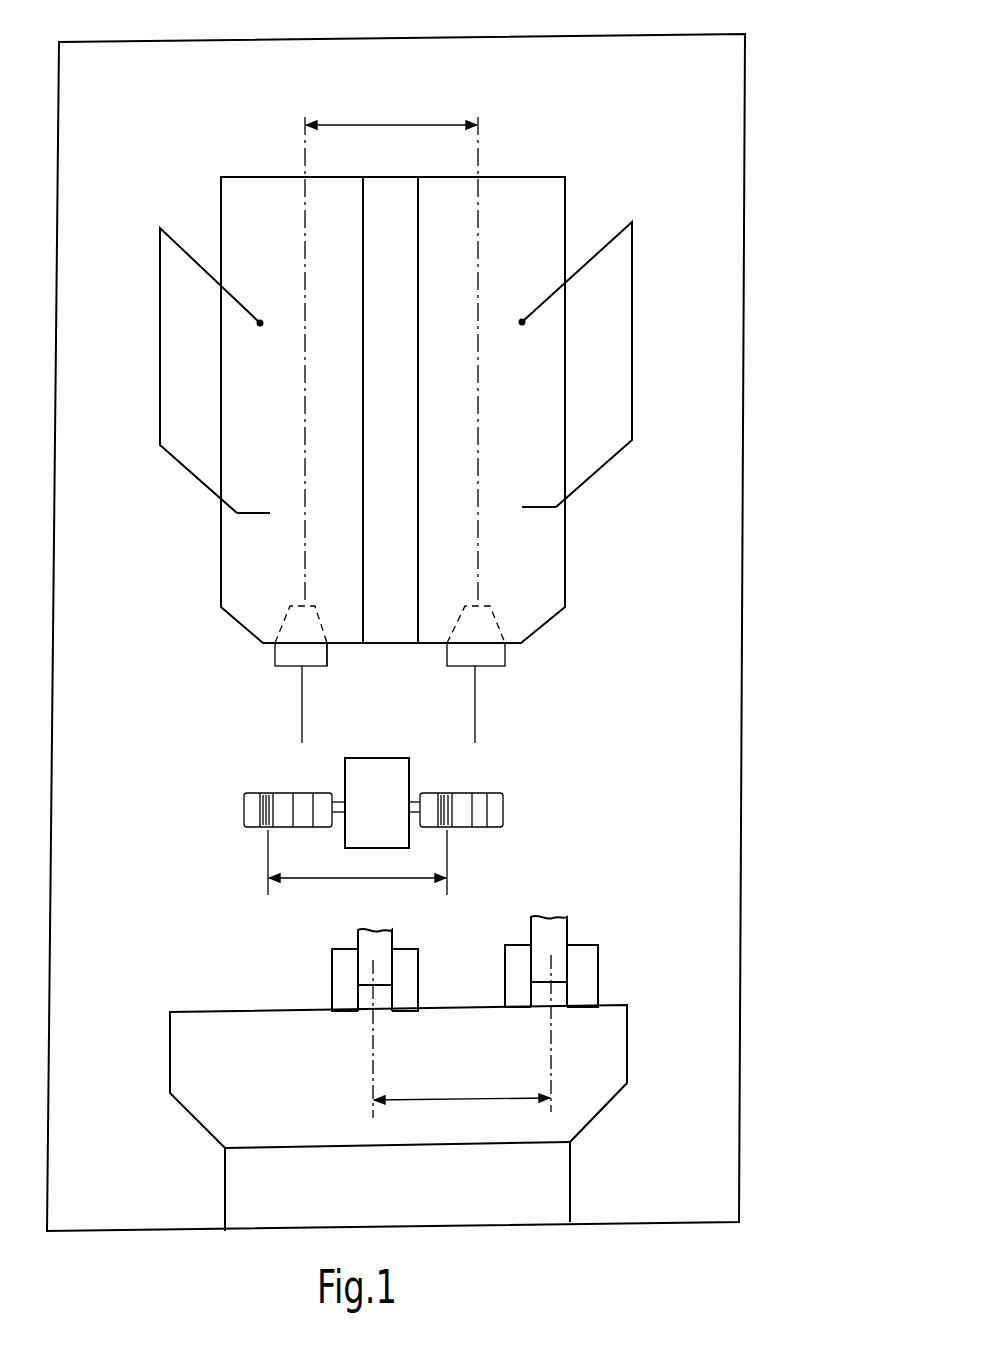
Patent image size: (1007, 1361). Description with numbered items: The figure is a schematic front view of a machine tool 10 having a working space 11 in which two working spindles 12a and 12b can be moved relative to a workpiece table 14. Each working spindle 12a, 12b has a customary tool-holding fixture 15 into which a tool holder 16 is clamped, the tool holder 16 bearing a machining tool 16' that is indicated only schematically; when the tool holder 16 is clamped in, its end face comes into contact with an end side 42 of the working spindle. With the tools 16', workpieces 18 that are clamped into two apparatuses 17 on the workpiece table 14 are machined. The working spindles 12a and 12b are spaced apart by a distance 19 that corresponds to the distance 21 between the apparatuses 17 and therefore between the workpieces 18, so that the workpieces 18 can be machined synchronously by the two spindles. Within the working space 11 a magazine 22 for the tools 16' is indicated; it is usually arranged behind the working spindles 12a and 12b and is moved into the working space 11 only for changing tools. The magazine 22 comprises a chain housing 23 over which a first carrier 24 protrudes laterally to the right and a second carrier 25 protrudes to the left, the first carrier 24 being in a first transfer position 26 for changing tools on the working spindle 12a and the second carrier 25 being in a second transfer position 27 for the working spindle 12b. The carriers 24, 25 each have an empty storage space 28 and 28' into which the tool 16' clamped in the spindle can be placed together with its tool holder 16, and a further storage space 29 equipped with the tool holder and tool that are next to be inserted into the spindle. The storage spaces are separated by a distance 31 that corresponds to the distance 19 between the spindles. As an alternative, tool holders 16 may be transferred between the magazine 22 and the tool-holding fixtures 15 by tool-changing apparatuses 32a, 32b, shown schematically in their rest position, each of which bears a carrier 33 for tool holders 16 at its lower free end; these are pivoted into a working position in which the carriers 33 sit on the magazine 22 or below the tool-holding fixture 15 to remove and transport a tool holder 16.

The machine tool 10 is at (768, 138).
The working space 11 is at (642, 654).
The working spindle 12a is at (515, 200).
The working spindle 12b is at (258, 198).
The workpiece table 14 is at (220, 1090).
The tool-holding fixture 15 is at (285, 622).
The tool holder 16 is at (352, 682).
The machining tool 16' is at (348, 707).
The apparatus 17 is at (397, 977).
The workpiece 18 is at (375, 943).
The distance 19 is at (388, 122).
The distance 21 is at (458, 1100).
The magazine 22 is at (604, 760).
The chain housing 23 is at (362, 770).
The first carrier 24 is at (505, 802).
The second carrier 25 is at (244, 812).
The first transfer position 26 is at (482, 782).
The second transfer position 27 is at (243, 833).
The empty storage space 28 is at (514, 845).
The empty storage space 28' is at (310, 841).
The further storage space 29 is at (262, 828).
The distance 31 is at (357, 879).
The tool-changing apparatus 32a is at (633, 340).
The tool-changing apparatus 32b is at (158, 348).
The carrier 33 is at (260, 514).
The end side 42 is at (330, 648).